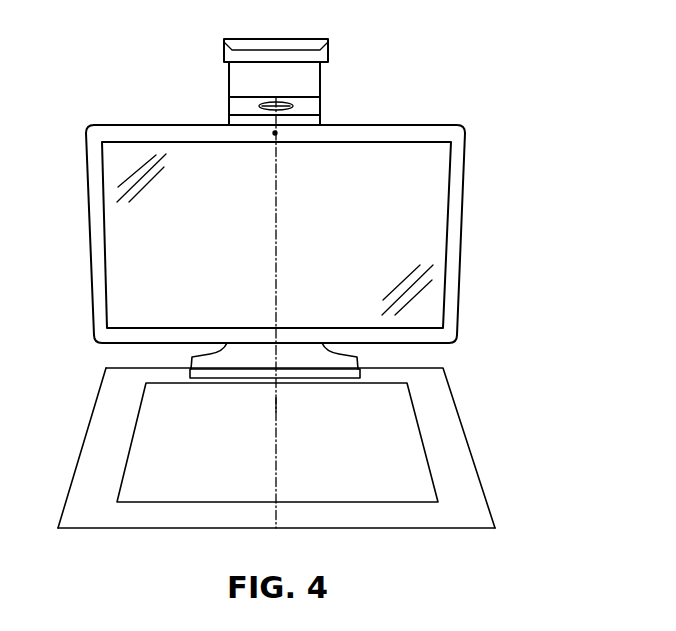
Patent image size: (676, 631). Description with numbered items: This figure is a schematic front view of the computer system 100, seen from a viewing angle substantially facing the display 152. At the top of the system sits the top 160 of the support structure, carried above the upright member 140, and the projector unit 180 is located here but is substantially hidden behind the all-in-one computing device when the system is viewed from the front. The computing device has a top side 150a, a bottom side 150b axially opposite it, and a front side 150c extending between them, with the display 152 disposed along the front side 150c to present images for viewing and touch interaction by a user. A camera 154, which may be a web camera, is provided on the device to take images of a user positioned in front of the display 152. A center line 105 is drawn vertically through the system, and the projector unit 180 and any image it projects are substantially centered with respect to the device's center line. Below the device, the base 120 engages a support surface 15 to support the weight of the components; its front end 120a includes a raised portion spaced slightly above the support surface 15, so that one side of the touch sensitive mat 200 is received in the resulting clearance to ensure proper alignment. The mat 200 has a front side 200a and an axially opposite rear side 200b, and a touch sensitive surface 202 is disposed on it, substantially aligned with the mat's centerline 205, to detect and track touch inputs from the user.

The computer system 100 is at (516, 196).
The central axis 105 is at (275, 175).
The base 120 is at (181, 365).
The front end 120a is at (218, 380).
The upright member 140 is at (228, 81).
The top side 150a is at (376, 125).
The bottom side 150b is at (403, 343).
The front side 150c is at (112, 230).
The display 152 is at (356, 200).
The camera 154 is at (277, 132).
The top 160 is at (333, 32).
The projector unit 180 is at (228, 116).
The touch sensitive mat 200 is at (447, 480).
The front side 200a is at (395, 528).
The rear side 200b is at (132, 368).
The touch sensitive surface 202 is at (410, 441).
The centerline 205 is at (280, 406).
The support surface 15 is at (630, 457).